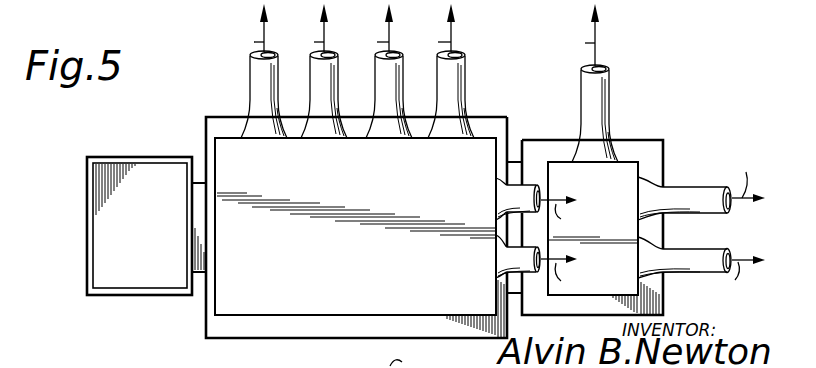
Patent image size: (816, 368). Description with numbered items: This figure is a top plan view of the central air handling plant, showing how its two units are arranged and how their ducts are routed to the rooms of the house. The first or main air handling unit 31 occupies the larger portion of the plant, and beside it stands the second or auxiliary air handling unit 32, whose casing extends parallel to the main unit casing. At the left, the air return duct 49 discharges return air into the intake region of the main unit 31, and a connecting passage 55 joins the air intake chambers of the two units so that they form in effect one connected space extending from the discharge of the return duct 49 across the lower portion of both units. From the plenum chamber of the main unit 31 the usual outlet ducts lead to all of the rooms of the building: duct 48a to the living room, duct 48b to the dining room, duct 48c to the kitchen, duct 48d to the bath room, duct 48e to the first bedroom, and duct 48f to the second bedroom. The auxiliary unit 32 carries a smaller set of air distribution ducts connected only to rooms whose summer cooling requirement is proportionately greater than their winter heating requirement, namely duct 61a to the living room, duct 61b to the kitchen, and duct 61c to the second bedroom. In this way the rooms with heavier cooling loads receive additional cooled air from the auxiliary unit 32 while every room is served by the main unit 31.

The main air handling unit 31 is at (327, 338).
The auxiliary air handling unit 32 is at (654, 140).
The outlet duct 48a is at (261, 141).
The outlet duct 48b is at (321, 141).
The outlet duct 48c is at (384, 141).
The outlet duct 48d is at (441, 141).
The outlet duct 48e is at (496, 257).
The outlet duct 48f is at (496, 197).
The air return duct 49 is at (95, 222).
The connecting passage 55 is at (515, 162).
The air distribution duct 61a is at (580, 165).
The air distribution duct 61b is at (638, 257).
The air distribution duct 61c is at (638, 196).